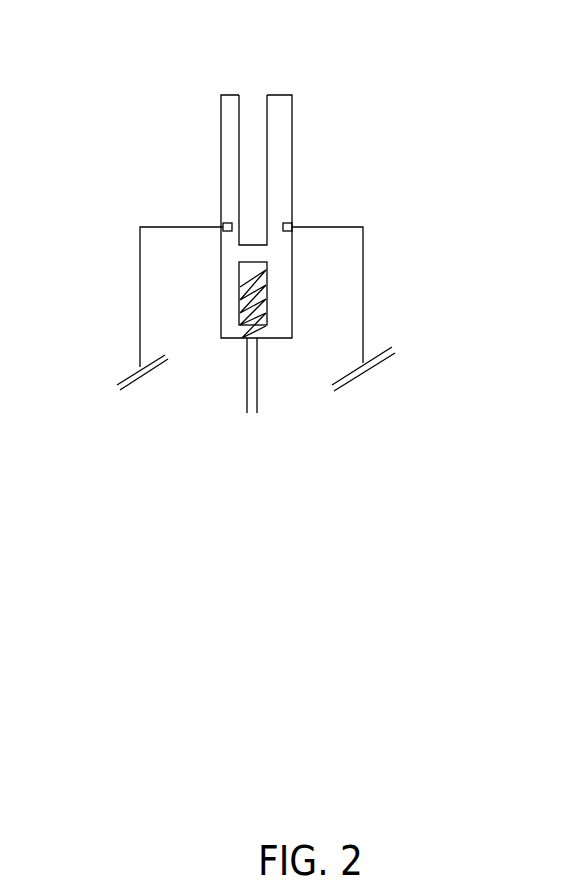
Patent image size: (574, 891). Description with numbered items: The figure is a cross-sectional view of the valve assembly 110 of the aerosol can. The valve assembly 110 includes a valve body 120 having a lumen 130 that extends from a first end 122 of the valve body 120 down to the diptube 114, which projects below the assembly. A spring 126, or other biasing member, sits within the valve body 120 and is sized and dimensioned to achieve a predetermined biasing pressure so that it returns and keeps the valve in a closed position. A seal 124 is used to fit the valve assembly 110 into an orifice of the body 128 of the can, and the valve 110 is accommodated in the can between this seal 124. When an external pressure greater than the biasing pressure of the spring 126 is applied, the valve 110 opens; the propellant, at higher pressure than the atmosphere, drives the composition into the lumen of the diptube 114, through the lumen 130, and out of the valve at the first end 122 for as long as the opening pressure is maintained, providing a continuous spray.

The valve assembly 110 is at (553, 505).
The diptube 114 is at (245, 385).
The valve body 120 is at (292, 148).
The first end 122 is at (292, 95).
The seal 124 is at (292, 221).
The spring 126 is at (267, 292).
The body 128 is at (363, 328).
The lumen 130 is at (248, 157).